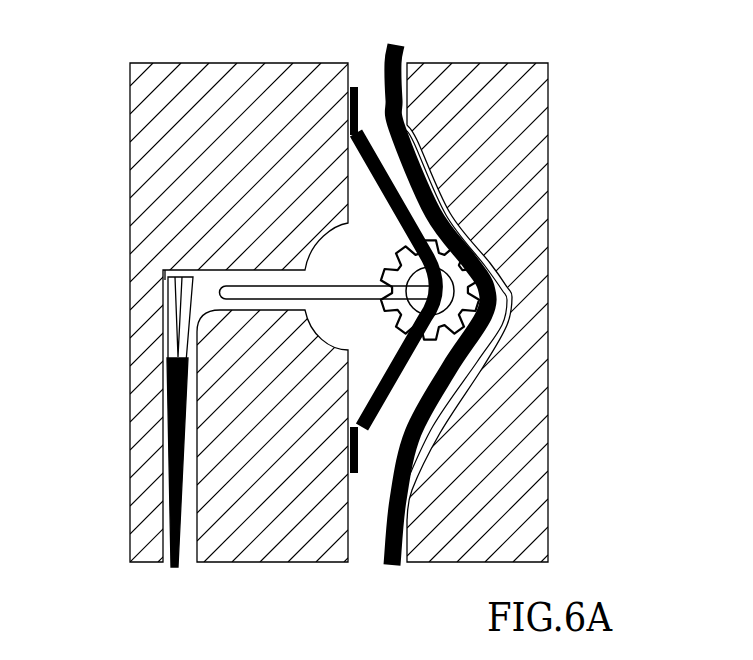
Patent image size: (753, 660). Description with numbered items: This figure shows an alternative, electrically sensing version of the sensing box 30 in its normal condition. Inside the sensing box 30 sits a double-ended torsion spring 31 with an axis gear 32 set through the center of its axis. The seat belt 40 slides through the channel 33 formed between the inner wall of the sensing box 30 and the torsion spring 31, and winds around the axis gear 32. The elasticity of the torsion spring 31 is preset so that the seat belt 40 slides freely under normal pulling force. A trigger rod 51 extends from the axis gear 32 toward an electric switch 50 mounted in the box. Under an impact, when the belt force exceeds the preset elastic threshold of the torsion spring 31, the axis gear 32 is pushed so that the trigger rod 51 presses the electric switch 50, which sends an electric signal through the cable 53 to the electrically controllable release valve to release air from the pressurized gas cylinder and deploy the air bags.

The sensing box 30 is at (503, 147).
The torsion spring 31 is at (453, 213).
The axis gear 32 is at (497, 302).
The channel 33 is at (372, 120).
The seat belt 40 is at (407, 33).
The electric switch 50 is at (173, 303).
The trigger rod 51 is at (285, 290).
The cable 53 is at (170, 480).